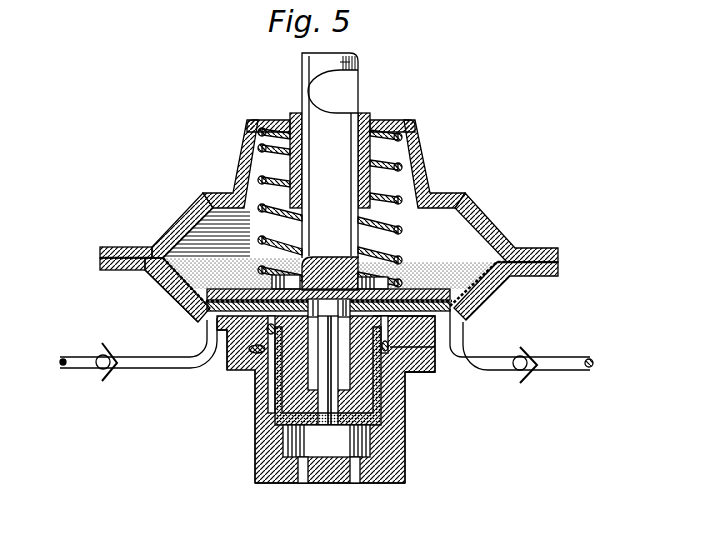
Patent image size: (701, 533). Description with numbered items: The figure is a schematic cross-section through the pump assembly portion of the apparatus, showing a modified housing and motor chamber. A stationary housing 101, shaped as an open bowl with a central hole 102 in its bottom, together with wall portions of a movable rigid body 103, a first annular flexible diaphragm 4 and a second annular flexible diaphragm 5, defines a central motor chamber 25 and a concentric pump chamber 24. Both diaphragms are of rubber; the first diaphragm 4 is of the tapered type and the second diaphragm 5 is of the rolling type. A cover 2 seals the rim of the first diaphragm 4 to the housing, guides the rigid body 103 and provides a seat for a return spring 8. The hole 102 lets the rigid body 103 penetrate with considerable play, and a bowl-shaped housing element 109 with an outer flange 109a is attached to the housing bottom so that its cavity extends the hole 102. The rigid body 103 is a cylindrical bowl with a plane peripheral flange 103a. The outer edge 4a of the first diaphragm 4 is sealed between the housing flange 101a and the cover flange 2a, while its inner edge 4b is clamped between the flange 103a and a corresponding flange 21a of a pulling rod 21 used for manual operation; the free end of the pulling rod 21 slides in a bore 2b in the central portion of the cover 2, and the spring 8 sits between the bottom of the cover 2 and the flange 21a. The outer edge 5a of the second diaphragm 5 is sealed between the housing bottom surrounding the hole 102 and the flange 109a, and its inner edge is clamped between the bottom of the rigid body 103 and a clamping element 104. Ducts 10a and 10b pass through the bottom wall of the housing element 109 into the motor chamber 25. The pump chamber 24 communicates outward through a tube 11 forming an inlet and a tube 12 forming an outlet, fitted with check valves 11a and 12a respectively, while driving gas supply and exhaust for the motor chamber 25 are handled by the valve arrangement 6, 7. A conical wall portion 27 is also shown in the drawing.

The cover 2 is at (419, 150).
The cover flange 2a is at (128, 250).
The bore 2b is at (372, 138).
The first annular flexible diaphragm 4 is at (160, 292).
The outer edge of first diaphragm 4a is at (110, 247).
The inner edge of first diaphragm 4b is at (182, 310).
The second annular flexible diaphragm 5 is at (257, 412).
The outer edge of second diaphragm 5a is at (249, 377).
The valve arrangement 6 is at (372, 483).
The valve arrangement 7 is at (402, 381).
The return spring 8 is at (249, 131).
The duct 10a is at (305, 475).
The duct 10b is at (357, 481).
The tube 11 is at (505, 338).
The check valve 11a is at (531, 357).
The tube 12 is at (190, 357).
The check valve 12a is at (100, 373).
The pulling rod 21 is at (358, 62).
The pulling rod flange 21a is at (447, 290).
The pump chamber 24 is at (472, 293).
The motor chamber 25 is at (385, 430).
The conical housing wall 27 is at (211, 193).
The stationary housing 101 is at (152, 280).
The housing flange 101a is at (100, 264).
The central hole 102 is at (230, 373).
The movable rigid body 103 is at (395, 410).
The peripheral flange 103a is at (460, 307).
The clamping element 104 is at (257, 443).
The housing element 109 is at (402, 463).
The outer flange 109a is at (437, 375).